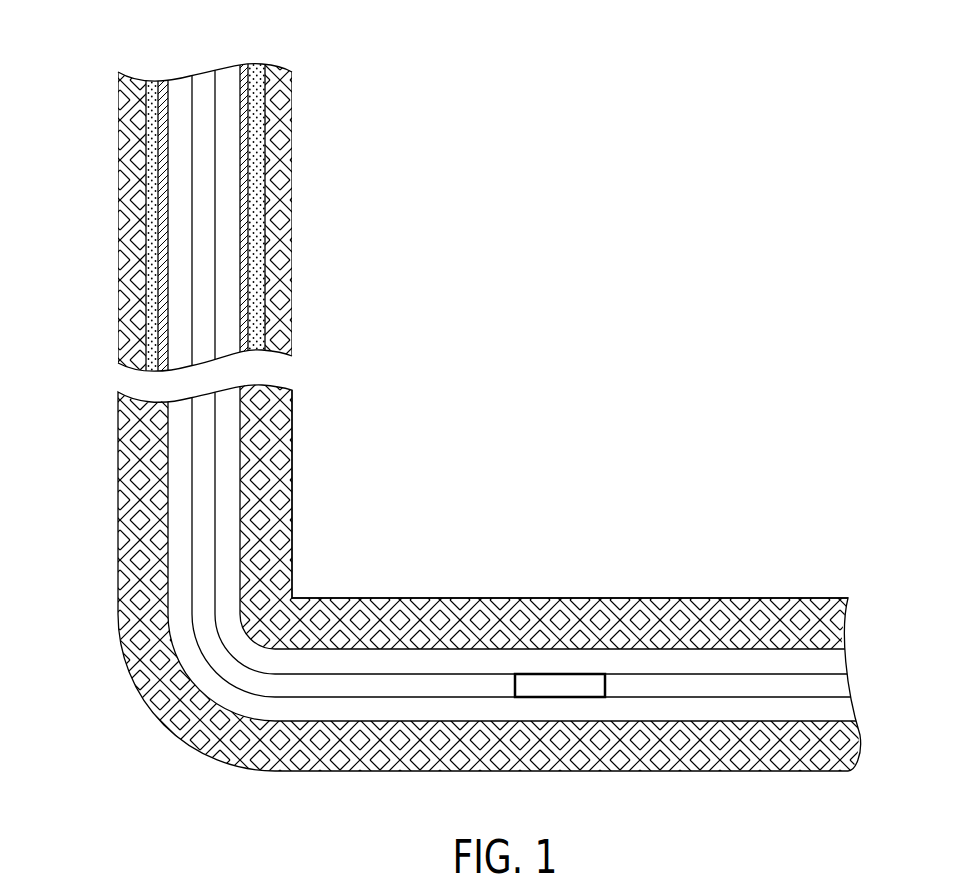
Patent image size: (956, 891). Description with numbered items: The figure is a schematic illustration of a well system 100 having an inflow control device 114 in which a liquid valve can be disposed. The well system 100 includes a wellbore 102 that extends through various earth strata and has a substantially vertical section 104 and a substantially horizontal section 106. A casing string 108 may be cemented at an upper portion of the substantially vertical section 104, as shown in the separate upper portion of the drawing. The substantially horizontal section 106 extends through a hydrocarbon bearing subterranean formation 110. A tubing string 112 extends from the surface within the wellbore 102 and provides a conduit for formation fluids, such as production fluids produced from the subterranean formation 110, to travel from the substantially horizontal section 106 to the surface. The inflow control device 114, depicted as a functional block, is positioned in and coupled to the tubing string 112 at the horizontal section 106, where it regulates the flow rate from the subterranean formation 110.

The well system 100 is at (84, 88).
The wellbore 102 is at (243, 490).
The substantially vertical section 104 is at (242, 425).
The substantially horizontal section 106 is at (628, 643).
The casing string 108 is at (245, 232).
The hydrocarbon bearing subterranean formation 110 is at (740, 480).
The tubing string 112 is at (218, 540).
The inflow control device 114 is at (573, 683).